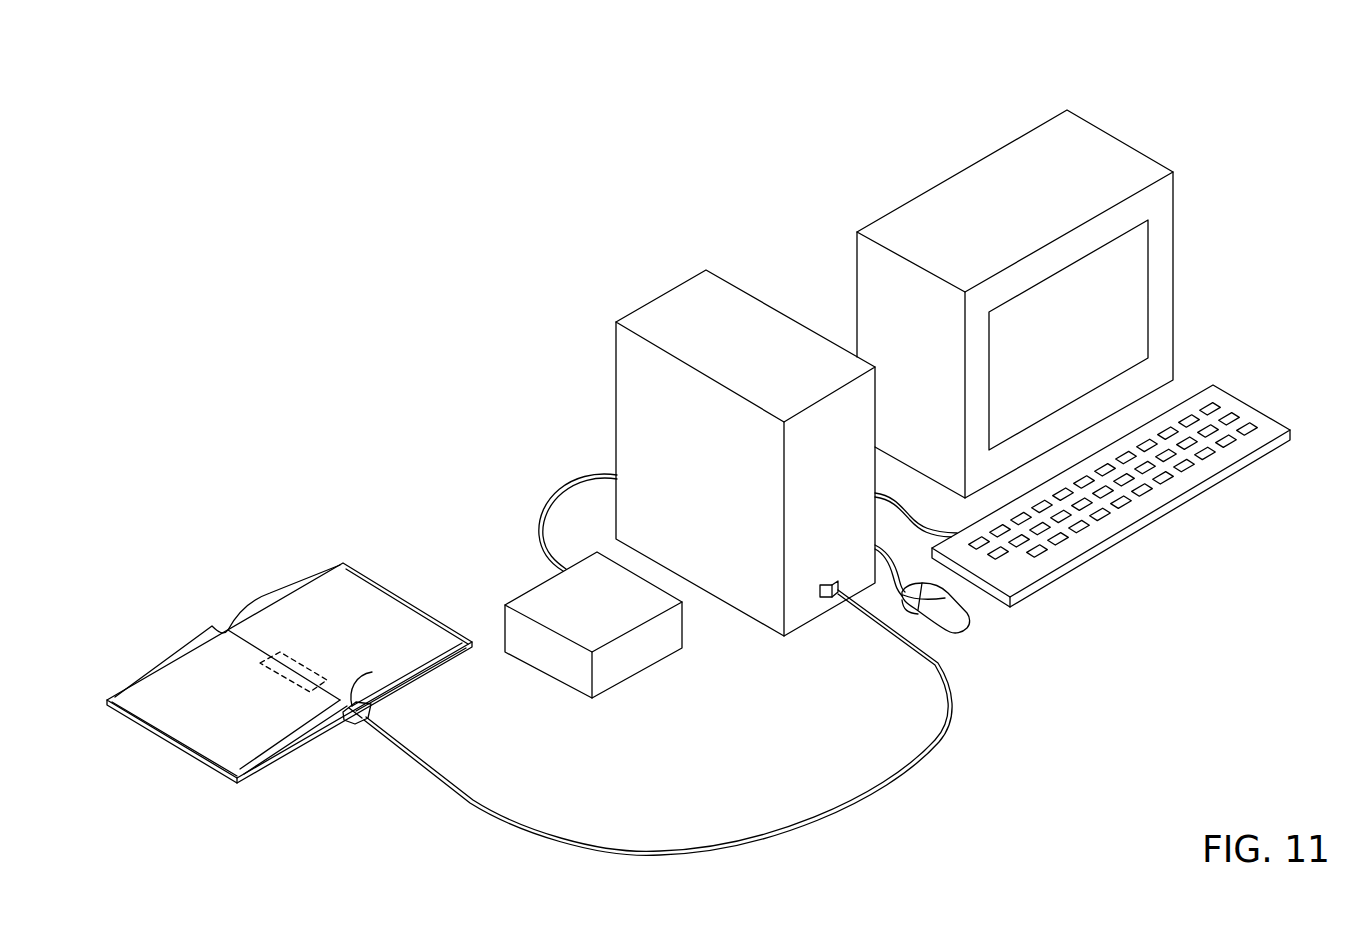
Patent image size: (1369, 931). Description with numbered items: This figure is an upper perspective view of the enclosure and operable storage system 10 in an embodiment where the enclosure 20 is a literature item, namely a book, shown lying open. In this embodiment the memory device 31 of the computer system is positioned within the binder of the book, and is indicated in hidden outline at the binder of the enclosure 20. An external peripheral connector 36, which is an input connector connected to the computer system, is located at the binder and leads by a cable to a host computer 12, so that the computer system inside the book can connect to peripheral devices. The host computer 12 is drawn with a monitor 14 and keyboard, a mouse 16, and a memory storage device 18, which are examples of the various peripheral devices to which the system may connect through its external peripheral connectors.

The enclosure and operable storage system 10 is at (408, 280).
The host computer 12 is at (720, 298).
The monitor 14 is at (1087, 143).
The mouse 16 is at (957, 625).
The memory storage device 18 is at (627, 665).
The enclosure 20 is at (270, 593).
The memory device 31 is at (313, 667).
The external peripheral connector 36 is at (343, 727).